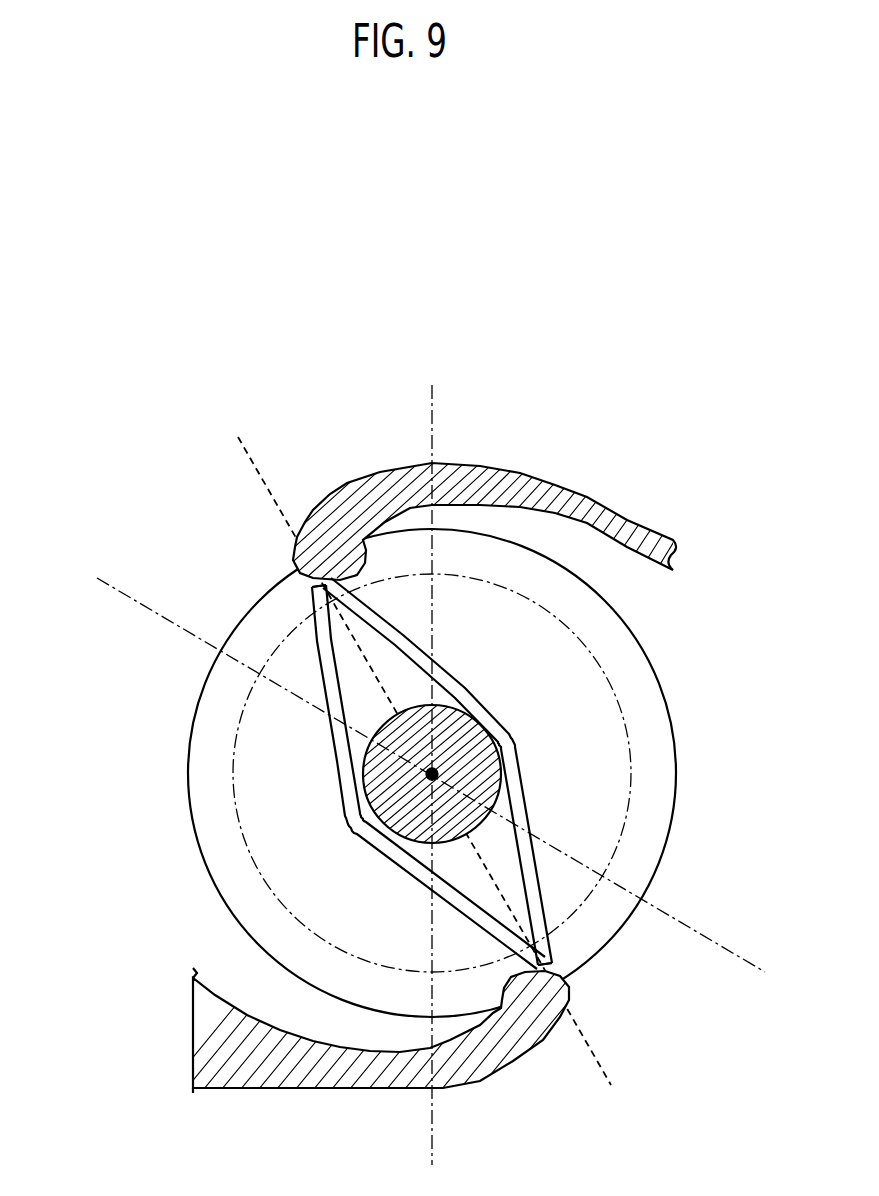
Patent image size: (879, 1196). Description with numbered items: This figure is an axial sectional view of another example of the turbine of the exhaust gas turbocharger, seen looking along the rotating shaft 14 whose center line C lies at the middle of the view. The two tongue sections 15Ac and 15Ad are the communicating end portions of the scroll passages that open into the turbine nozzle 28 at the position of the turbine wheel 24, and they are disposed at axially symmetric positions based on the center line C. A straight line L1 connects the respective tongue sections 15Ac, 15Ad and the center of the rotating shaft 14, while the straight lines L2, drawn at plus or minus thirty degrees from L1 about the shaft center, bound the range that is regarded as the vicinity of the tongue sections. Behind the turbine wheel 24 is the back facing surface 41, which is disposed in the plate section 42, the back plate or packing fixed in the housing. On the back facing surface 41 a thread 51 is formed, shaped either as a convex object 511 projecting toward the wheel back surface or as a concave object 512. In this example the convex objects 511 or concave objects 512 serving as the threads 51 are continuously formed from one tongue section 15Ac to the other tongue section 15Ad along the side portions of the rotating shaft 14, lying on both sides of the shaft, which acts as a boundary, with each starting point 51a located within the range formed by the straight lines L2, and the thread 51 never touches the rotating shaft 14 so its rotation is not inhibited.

The rotating shaft 14 is at (500, 790).
The tongue section 15Ad is at (292, 586).
The tongue section 15Ac is at (562, 970).
The turbine wheel 24 is at (232, 778).
The turbine nozzle 28 is at (215, 753).
The back facing surface 41 is at (300, 880).
The plate section 42 is at (202, 855).
The thread 51 is at (423, 773).
The convex object 511 is at (428, 777).
The concave object 512 is at (463, 683).
The starting point 51a is at (338, 500).
The center line C is at (432, 774).
The straight line L1 is at (255, 458).
The straight line L2 is at (436, 402).